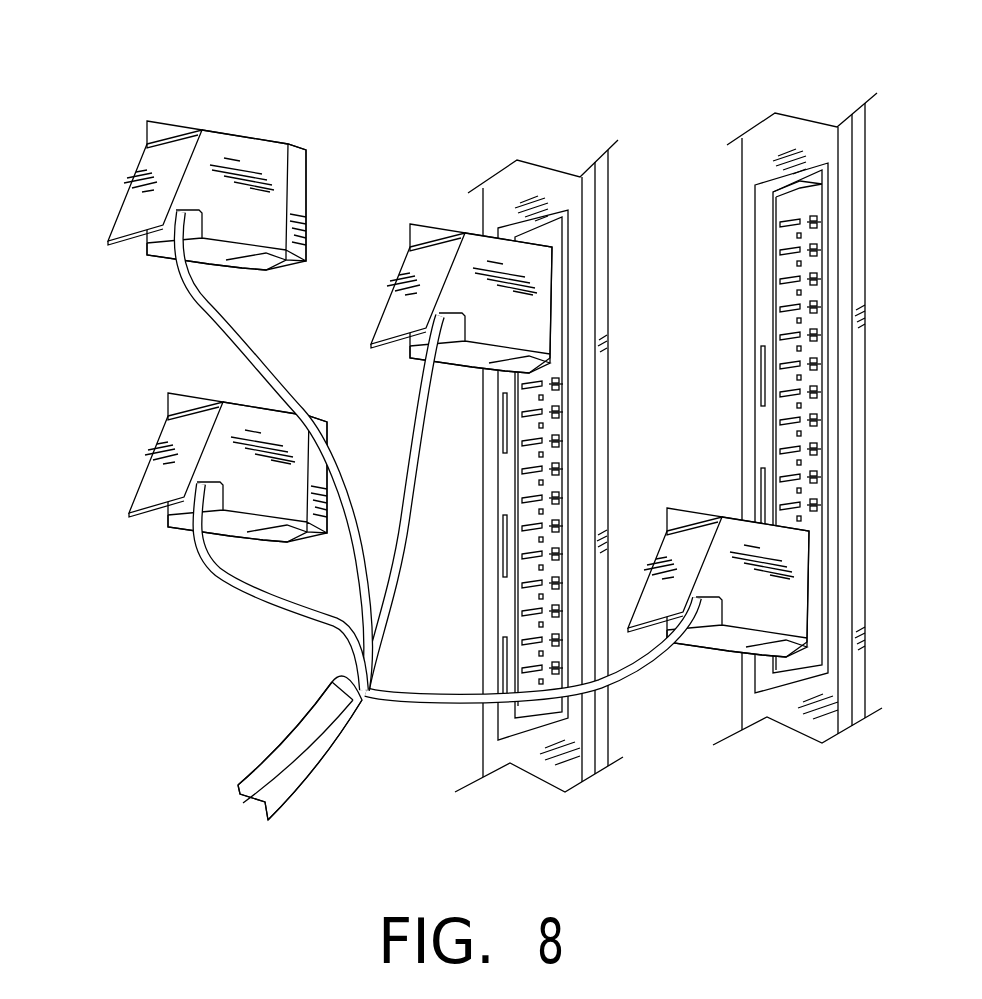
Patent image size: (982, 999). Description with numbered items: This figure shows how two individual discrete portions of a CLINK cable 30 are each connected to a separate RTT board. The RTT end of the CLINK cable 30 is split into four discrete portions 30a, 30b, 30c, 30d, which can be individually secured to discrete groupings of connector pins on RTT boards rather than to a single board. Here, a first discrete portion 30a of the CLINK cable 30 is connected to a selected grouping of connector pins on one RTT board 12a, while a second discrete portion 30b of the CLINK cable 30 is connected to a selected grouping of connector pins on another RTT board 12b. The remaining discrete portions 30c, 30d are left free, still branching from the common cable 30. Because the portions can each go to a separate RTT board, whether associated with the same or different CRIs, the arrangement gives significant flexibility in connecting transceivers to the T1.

The RTT board 12a is at (532, 178).
The RTT board 12b is at (793, 135).
The CLINK cable 30 is at (290, 757).
The first discrete portion 30a is at (442, 253).
The second discrete portion 30b is at (700, 540).
The discrete portion 30c is at (173, 440).
The discrete portion 30d is at (180, 148).